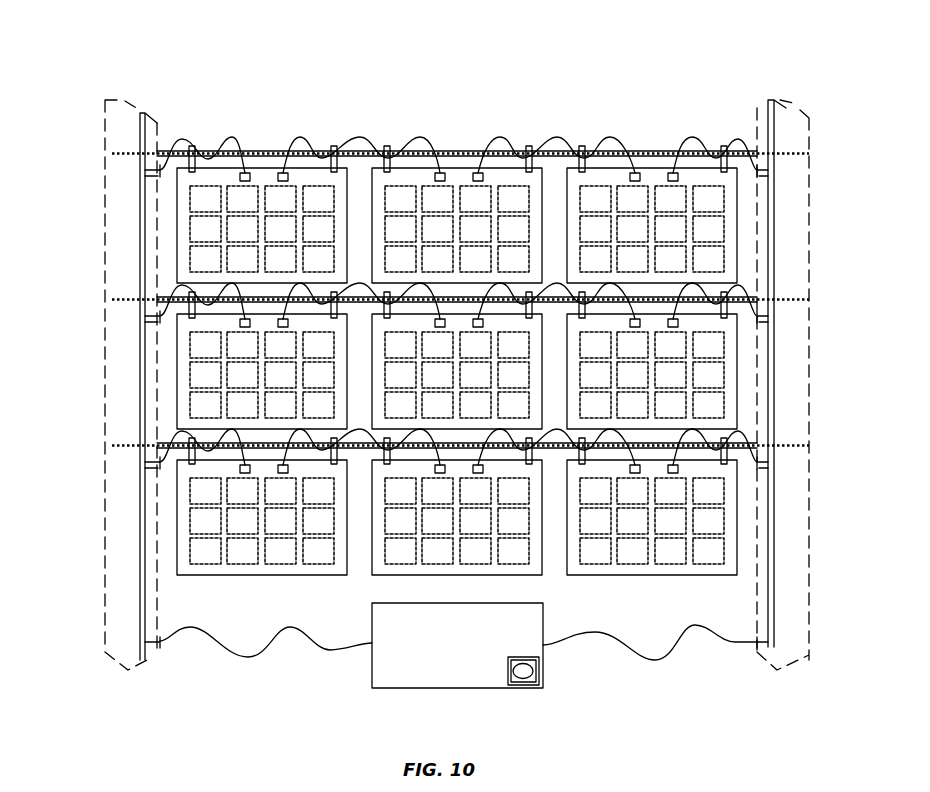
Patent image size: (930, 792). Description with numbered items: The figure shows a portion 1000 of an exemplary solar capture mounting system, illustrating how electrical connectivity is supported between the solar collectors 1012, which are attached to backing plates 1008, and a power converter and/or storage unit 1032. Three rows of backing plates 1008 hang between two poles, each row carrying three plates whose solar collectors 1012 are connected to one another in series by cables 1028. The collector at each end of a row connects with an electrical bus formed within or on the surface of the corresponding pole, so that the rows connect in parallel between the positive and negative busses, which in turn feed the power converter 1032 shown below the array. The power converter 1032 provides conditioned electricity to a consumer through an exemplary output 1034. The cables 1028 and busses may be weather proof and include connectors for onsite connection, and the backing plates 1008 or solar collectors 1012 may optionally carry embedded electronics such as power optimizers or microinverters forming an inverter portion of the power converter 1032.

The portion of solar capture mounting system 1000 is at (99, 42).
The backing plate 1008 is at (228, 563).
The solar collector 1012 is at (288, 546).
The cable 1028 is at (512, 150).
The power converter and/or storage unit 1032 is at (370, 680).
The output 1034 is at (542, 682).